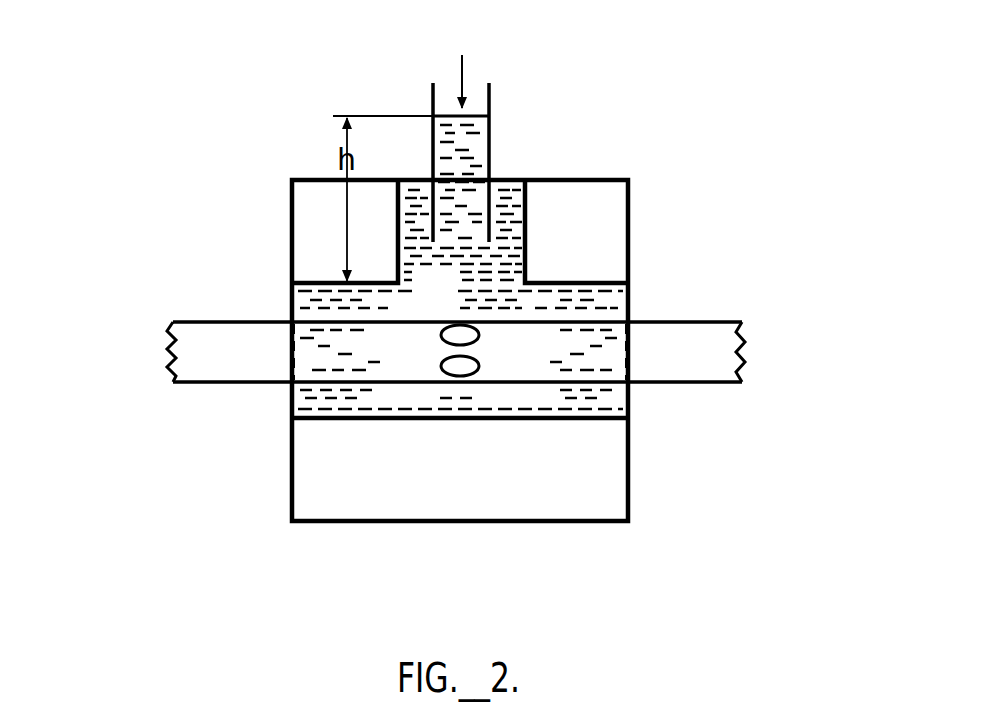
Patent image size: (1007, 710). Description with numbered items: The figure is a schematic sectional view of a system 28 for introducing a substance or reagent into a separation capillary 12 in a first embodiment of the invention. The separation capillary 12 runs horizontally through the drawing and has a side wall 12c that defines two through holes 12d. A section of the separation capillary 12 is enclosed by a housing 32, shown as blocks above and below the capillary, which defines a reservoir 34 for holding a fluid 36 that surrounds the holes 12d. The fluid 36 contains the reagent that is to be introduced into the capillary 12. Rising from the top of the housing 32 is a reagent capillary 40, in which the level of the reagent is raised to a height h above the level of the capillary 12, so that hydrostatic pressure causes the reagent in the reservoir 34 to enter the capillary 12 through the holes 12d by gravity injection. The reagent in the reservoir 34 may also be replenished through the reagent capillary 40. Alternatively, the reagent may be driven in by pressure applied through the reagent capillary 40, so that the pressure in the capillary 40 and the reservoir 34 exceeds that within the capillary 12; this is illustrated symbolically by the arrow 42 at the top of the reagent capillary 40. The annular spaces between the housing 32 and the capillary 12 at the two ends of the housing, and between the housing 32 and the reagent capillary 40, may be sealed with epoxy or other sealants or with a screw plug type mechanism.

The system 28 is at (224, 92).
The housing 32 is at (596, 243).
The reservoir 34 is at (454, 421).
The fluid 36 is at (452, 302).
The separation capillary 12 is at (202, 455).
The side wall 12c is at (743, 352).
The through holes 12d is at (482, 343).
The reagent capillary 40 is at (493, 118).
The arrow 42 is at (462, 70).